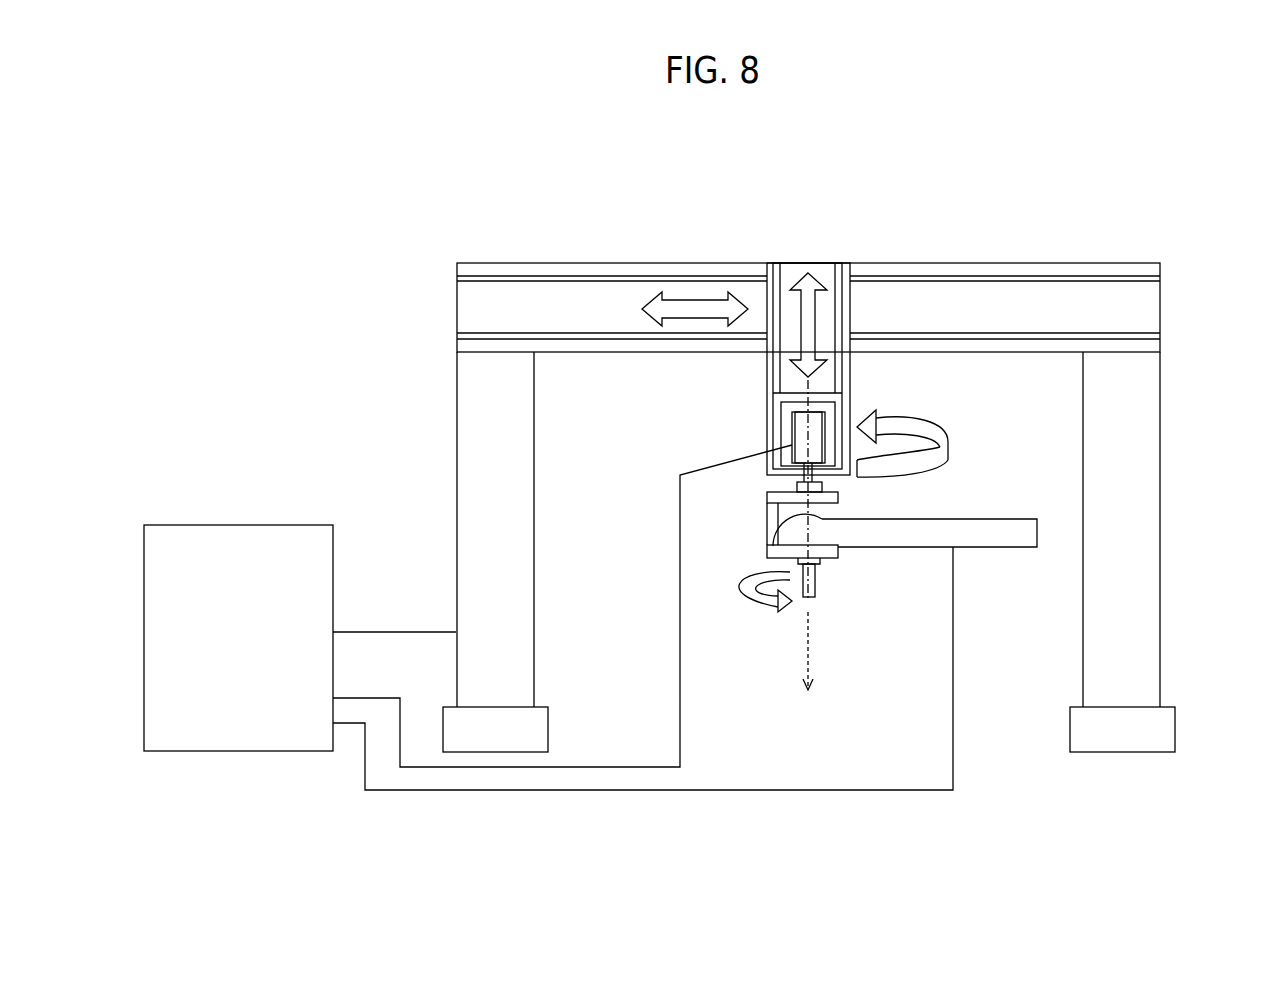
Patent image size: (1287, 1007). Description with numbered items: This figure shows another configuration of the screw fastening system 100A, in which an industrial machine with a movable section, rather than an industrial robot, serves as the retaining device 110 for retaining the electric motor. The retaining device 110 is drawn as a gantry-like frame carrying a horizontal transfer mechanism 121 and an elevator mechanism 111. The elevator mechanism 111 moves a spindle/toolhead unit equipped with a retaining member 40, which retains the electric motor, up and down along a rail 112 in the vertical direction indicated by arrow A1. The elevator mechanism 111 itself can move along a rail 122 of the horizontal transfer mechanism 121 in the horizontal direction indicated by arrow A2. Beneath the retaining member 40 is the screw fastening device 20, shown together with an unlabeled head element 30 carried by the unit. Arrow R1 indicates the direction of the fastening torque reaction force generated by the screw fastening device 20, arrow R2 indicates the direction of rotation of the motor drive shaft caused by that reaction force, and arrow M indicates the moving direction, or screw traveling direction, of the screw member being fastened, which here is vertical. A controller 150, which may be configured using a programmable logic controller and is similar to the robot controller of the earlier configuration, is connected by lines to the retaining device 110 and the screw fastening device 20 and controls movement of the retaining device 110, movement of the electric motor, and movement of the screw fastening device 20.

The screw fastening system 100A is at (1196, 150).
The retaining device 110 is at (990, 250).
The elevator mechanism 111 is at (852, 373).
The rail 112 is at (767, 385).
The horizontal transfer mechanism 121 is at (537, 262).
The rail 122 is at (608, 275).
The retaining member 40 is at (759, 440).
The tool head 30 is at (755, 532).
The screw fastening device 20 is at (992, 511).
The controller 150 is at (308, 523).
The arrow A1 is at (818, 323).
The arrow A2 is at (698, 302).
The arrow R1 is at (748, 605).
The arrow R2 is at (930, 422).
The arrow M is at (812, 655).